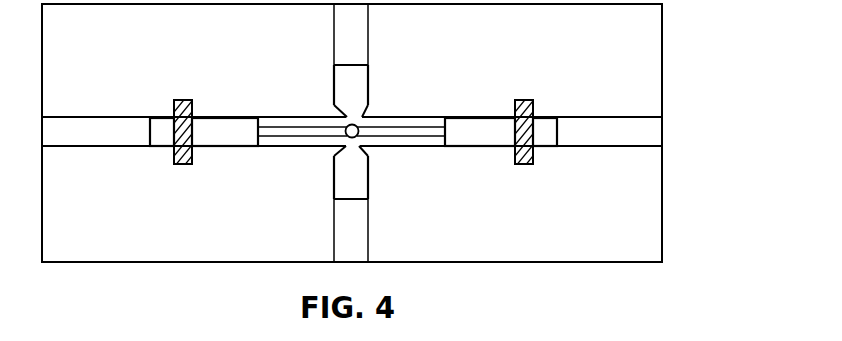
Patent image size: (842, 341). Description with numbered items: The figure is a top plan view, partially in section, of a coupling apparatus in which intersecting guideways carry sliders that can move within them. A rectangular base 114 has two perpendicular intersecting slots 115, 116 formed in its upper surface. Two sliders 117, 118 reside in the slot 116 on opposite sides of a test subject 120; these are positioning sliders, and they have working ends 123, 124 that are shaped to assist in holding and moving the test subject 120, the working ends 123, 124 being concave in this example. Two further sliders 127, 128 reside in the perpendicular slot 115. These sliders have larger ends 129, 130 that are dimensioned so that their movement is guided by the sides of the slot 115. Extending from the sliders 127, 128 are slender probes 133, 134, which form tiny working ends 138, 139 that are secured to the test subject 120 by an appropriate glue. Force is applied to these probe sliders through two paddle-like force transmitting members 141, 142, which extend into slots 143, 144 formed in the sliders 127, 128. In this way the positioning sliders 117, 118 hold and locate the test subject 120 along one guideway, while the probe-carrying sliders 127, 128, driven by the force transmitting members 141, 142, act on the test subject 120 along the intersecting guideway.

The rectangular base 114 is at (676, 48).
The slot 115 is at (652, 135).
The slot 116 is at (360, 241).
The slider 117 is at (340, 77).
The slider 118 is at (343, 190).
The test subject 120 is at (364, 120).
The working end 123 is at (338, 108).
The working end 124 is at (368, 150).
The slider 127 is at (142, 153).
The slider 128 is at (555, 115).
The larger end 129 is at (163, 141).
The larger end 130 is at (545, 137).
The slender probe 133 is at (282, 136).
The slender probe 134 is at (425, 136).
The working end 138 is at (339, 140).
The working end 139 is at (366, 126).
The paddle-like force transmitting member 141 is at (185, 103).
The paddle-like force transmitting member 142 is at (525, 100).
The slot 143 is at (173, 117).
The slot 144 is at (528, 153).